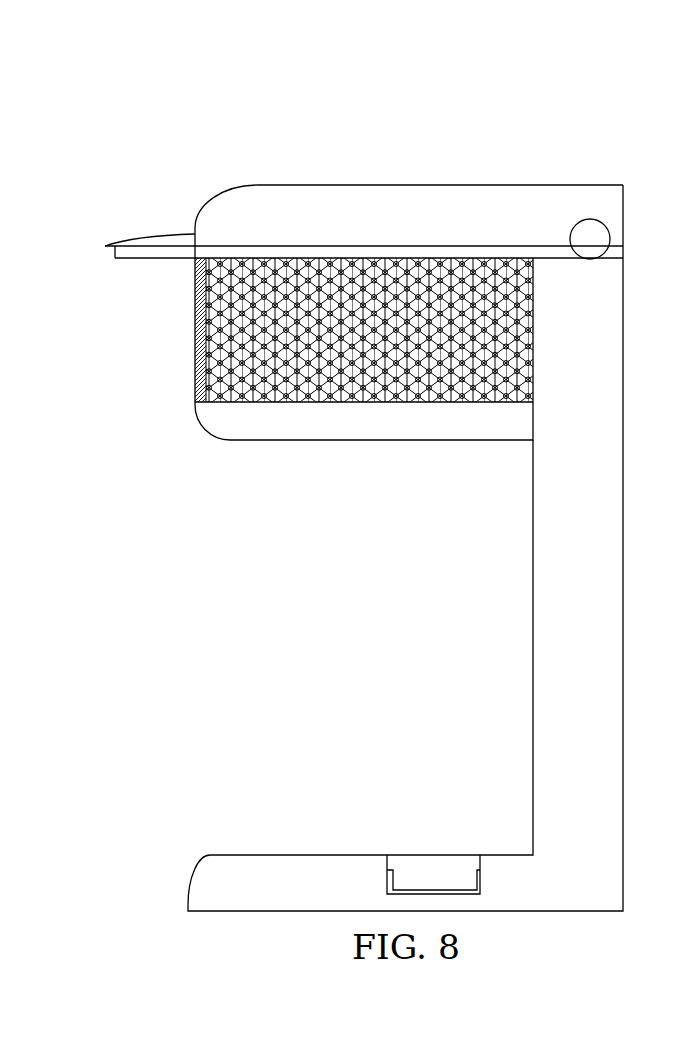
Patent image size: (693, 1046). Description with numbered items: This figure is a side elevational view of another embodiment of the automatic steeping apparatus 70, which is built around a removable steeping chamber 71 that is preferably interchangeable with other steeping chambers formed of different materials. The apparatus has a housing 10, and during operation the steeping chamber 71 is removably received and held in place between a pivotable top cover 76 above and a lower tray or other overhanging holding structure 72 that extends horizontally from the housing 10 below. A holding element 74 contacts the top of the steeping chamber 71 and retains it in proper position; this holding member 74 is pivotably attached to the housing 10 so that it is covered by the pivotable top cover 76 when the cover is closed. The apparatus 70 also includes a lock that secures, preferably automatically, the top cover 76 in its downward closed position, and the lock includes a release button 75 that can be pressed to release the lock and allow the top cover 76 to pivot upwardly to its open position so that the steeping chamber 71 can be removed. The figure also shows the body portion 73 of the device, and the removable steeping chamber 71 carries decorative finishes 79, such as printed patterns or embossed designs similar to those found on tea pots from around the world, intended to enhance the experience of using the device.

The housing 10 is at (374, 475).
The automatic steeping apparatus 70 is at (387, 221).
The removable steeping chamber 71 is at (295, 375).
The lower tray 72 is at (346, 445).
The steeper device body 73 is at (527, 736).
The holding element 74 is at (350, 241).
The release button 75 is at (588, 232).
The pivotable top cover 76 is at (458, 181).
The decorative finishes 79 is at (203, 304).